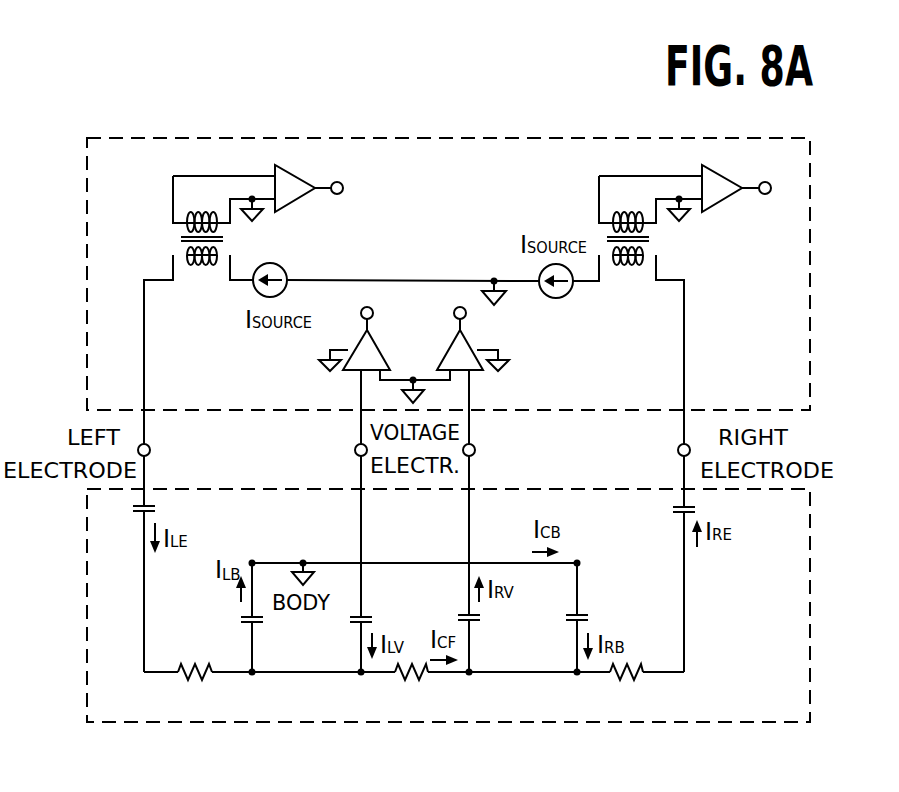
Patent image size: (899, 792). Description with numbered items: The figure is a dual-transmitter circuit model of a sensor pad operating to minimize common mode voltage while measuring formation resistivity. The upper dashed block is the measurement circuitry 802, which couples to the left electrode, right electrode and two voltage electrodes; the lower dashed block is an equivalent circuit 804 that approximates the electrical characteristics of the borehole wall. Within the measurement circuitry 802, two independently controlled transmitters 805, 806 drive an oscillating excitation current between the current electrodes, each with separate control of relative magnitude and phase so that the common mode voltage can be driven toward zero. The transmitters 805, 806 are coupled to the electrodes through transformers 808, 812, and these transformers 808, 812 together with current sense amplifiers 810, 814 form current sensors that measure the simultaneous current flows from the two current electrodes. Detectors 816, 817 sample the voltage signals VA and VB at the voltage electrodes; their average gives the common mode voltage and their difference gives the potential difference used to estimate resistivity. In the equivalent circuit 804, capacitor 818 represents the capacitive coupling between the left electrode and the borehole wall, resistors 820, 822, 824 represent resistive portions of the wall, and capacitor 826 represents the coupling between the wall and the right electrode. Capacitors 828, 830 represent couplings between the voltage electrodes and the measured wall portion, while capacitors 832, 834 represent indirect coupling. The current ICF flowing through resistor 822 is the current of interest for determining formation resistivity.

The measurement circuitry 802 is at (142, 136).
The equivalent circuit 804 is at (145, 723).
The transmitter 805 is at (290, 270).
The transmitter 806 is at (552, 296).
The transformer 808 is at (208, 270).
The current sense amplifier 810 is at (287, 207).
The transformer 812 is at (633, 270).
The current sense amplifier 814 is at (705, 208).
The detector 816 is at (350, 373).
The detector 817 is at (478, 373).
The capacitor 818 is at (140, 513).
The resistor 820 is at (190, 676).
The resistor 822 is at (407, 674).
The resistor 824 is at (618, 678).
The capacitor 826 is at (697, 508).
The capacitor 828 is at (355, 623).
The capacitor 830 is at (478, 622).
The capacitor 832 is at (245, 622).
The capacitor 834 is at (583, 613).